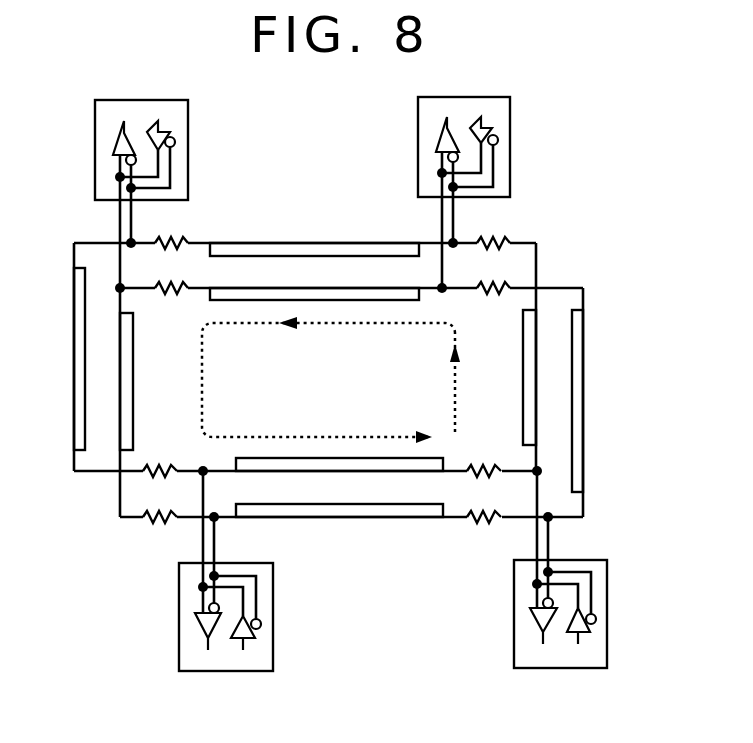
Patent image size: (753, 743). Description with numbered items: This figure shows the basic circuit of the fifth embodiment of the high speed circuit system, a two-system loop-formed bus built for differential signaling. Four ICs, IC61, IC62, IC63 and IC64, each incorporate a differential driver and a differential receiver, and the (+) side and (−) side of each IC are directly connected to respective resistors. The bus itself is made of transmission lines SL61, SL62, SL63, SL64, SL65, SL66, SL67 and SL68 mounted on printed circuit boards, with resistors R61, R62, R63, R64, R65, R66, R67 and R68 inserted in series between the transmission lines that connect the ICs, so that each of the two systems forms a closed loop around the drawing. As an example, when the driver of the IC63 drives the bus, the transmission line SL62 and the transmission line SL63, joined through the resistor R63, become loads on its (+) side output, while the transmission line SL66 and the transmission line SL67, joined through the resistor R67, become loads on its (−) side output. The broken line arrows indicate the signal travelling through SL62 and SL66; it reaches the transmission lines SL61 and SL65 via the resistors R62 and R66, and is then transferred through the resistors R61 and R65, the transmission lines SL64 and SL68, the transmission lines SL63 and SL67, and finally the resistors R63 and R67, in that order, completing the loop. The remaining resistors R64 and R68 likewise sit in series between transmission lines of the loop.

The IC IC61 is at (188, 125).
The IC IC62 is at (510, 125).
The IC IC63 is at (607, 628).
The IC IC64 is at (273, 633).
The resistor R61 is at (171, 275).
The resistor R62 is at (490, 275).
The resistor R63 is at (482, 531).
The resistor R64 is at (162, 532).
The resistor R65 is at (171, 230).
The resistor R66 is at (490, 230).
The resistor R67 is at (482, 486).
The resistor R68 is at (162, 486).
The transmission line SL61 is at (314, 279).
The transmission line SL62 is at (607, 401).
The transmission line SL63 is at (339, 527).
The transmission line SL64 is at (157, 381).
The transmission line SL65 is at (314, 235).
The transmission line SL66 is at (498, 377).
The transmission line SL67 is at (339, 481).
The transmission line SL68 is at (47, 359).